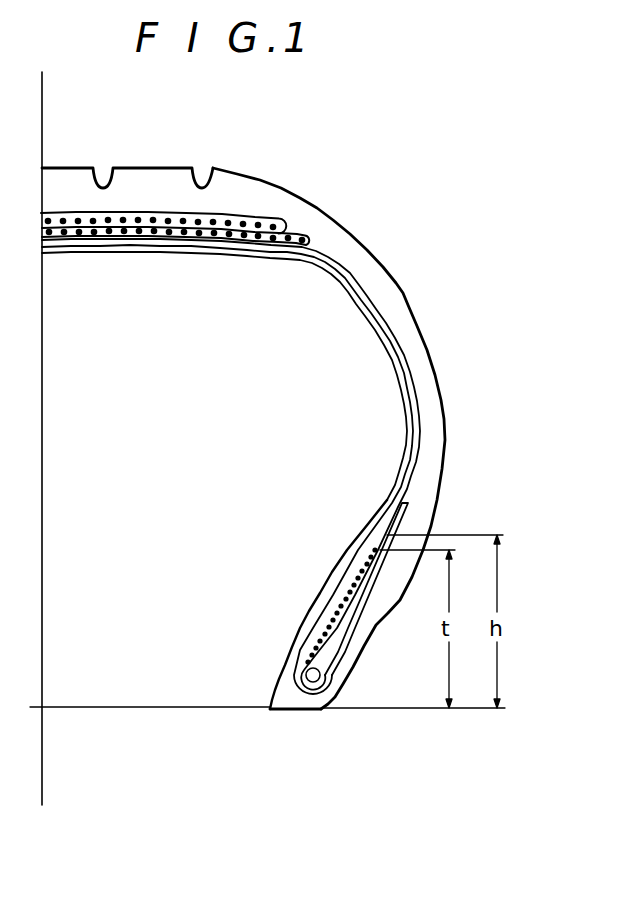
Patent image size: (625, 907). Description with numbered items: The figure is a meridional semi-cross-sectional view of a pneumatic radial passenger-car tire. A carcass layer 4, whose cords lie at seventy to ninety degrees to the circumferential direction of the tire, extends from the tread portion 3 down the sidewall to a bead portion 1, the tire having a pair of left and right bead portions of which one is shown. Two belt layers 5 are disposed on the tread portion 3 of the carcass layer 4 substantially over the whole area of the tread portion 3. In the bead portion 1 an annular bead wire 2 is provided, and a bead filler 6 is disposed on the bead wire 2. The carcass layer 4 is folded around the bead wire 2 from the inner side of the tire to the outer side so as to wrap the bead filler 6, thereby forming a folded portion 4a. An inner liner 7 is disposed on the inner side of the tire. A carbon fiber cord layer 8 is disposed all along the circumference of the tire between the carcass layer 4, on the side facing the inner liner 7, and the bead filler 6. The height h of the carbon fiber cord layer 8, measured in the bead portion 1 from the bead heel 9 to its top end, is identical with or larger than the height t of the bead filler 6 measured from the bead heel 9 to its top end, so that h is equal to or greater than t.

The bead portion 1 is at (295, 607).
The bead wire 2 is at (312, 681).
The tread portion 3 is at (165, 178).
The carcass layer 4 is at (388, 340).
The folded portion 4a is at (355, 636).
The belt layers 5 is at (310, 248).
The bead filler 6 is at (323, 653).
The inner liner 7 is at (405, 412).
The carbon fiber cord layer 8 is at (345, 592).
The bead heel 9 is at (320, 713).